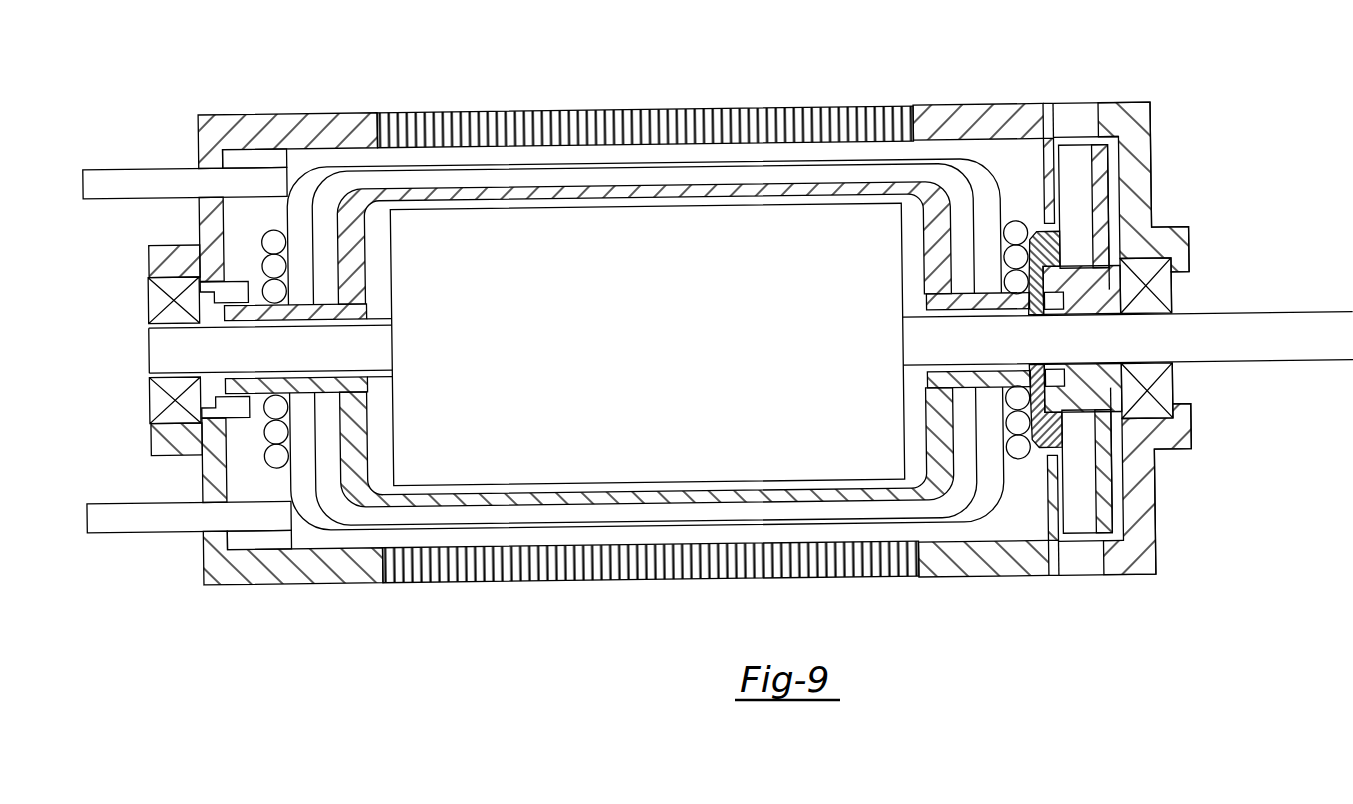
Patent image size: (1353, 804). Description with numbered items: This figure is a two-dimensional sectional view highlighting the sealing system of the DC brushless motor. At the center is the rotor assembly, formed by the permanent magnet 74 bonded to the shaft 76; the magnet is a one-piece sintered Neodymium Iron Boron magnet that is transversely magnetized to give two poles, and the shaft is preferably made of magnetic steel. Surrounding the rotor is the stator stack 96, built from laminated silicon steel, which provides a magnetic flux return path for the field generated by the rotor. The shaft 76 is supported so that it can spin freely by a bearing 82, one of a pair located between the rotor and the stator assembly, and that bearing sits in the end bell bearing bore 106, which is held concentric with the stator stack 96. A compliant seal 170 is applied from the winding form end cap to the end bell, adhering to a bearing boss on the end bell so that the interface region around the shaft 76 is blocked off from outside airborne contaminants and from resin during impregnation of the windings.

The permanent magnet 74 is at (893, 283).
The shaft 76 is at (1340, 305).
The bearing 82 is at (1172, 293).
The stator stack 96 is at (985, 102).
The end bell bearing bore 106 is at (1150, 133).
The compliant seal 170 is at (1060, 242).